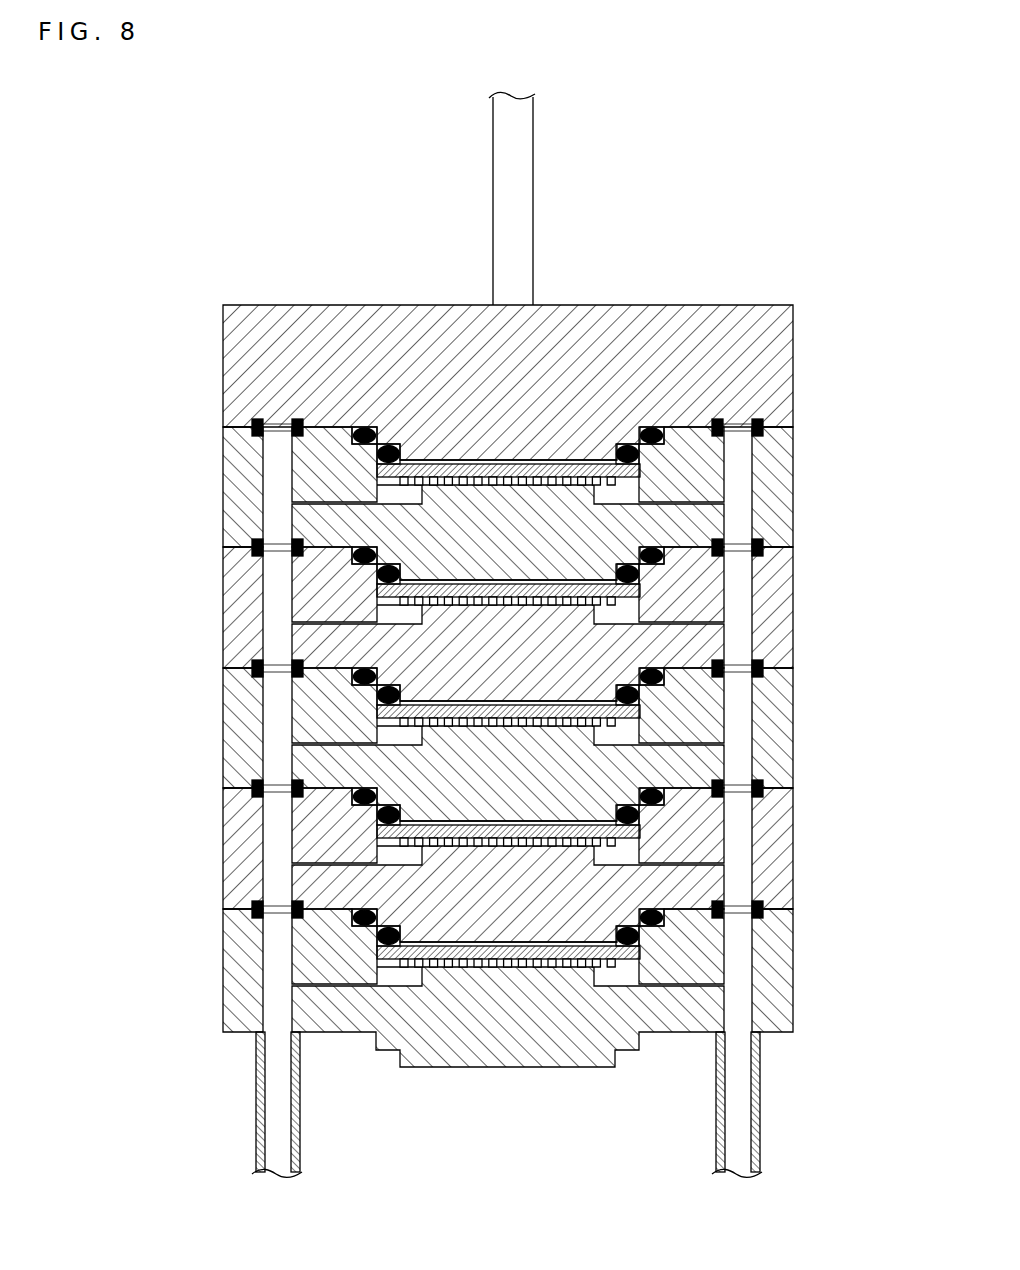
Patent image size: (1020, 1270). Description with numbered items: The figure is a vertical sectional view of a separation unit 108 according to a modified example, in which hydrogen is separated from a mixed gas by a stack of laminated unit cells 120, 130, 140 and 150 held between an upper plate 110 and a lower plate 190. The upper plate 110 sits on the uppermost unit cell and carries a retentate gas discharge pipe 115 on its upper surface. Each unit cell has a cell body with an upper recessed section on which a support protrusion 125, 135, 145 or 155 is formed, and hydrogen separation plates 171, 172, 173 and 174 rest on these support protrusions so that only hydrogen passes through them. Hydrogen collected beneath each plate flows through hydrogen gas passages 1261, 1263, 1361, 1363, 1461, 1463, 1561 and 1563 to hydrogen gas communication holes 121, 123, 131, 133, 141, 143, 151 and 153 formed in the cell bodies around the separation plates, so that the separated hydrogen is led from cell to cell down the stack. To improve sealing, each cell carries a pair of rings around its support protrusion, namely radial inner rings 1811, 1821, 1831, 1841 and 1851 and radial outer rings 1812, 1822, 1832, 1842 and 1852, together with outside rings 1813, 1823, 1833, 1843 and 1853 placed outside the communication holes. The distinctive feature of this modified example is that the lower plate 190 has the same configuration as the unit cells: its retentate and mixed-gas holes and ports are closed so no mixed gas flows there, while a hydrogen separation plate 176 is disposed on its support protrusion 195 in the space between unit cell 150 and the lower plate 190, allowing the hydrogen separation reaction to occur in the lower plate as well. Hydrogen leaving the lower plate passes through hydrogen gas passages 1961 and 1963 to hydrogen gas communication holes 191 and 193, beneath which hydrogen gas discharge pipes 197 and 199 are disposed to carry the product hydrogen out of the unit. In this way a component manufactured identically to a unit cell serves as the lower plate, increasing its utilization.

The separation unit 108 is at (699, 205).
The upper plate 110 is at (206, 349).
The retentate gas discharge pipe 115 is at (533, 171).
The unit cell 120 is at (456, 418).
The hydrogen gas communication hole 121 is at (745, 497).
The hydrogen gas communication hole 123 is at (273, 516).
The support protrusion 125 is at (508, 528).
The hydrogen gas passage 1261 is at (680, 490).
The hydrogen gas passage 1263 is at (297, 496).
The unit cell 130 is at (457, 599).
The hydrogen gas communication hole 131 is at (745, 617).
The hydrogen gas communication hole 133 is at (273, 636).
The support protrusion 135 is at (508, 649).
The hydrogen gas passage 1361 is at (680, 610).
The hydrogen gas passage 1363 is at (297, 616).
The unit cell 140 is at (456, 720).
The hydrogen gas communication hole 141 is at (745, 738).
The hydrogen gas communication hole 143 is at (273, 757).
The support protrusion 145 is at (508, 769).
The hydrogen gas passage 1461 is at (680, 731).
The hydrogen gas passage 1463 is at (297, 737).
The unit cell 150 is at (456, 840).
The hydrogen gas communication hole 151 is at (745, 858).
The hydrogen gas communication hole 153 is at (273, 877).
The support protrusion 155 is at (508, 890).
The hydrogen gas passage 1561 is at (680, 851).
The hydrogen gas passage 1563 is at (297, 857).
The lower plate 190 is at (456, 963).
The hydrogen gas communication hole 191 is at (745, 979).
The hydrogen gas communication hole 193 is at (273, 998).
The support protrusion 195 is at (480, 963).
The hydrogen gas passage 1961 is at (680, 972).
The hydrogen gas passage 1963 is at (297, 978).
The hydrogen separation plate 171 is at (493, 464).
The hydrogen separation plate 172 is at (498, 584).
The hydrogen separation plate 173 is at (498, 705).
The hydrogen separation plate 174 is at (498, 825).
The hydrogen separation plate 176 is at (498, 946).
The radial inner ring 1811 is at (630, 446).
The radial outer ring 1812 is at (655, 428).
The outside ring 1813 is at (765, 420).
The radial inner ring 1821 is at (618, 574).
The radial outer ring 1822 is at (638, 550).
The outside ring 1823 is at (765, 551).
The radial inner ring 1831 is at (618, 695).
The radial outer ring 1832 is at (638, 671).
The outside ring 1833 is at (765, 672).
The radial inner ring 1841 is at (618, 815).
The radial outer ring 1842 is at (638, 791).
The outside ring 1843 is at (765, 792).
The radial inner ring 1851 is at (618, 936).
The radial outer ring 1852 is at (638, 912).
The outside ring 1853 is at (765, 913).
The hydrogen gas discharge pipe 197 is at (752, 1110).
The hydrogen gas discharge pipe 199 is at (299, 1110).